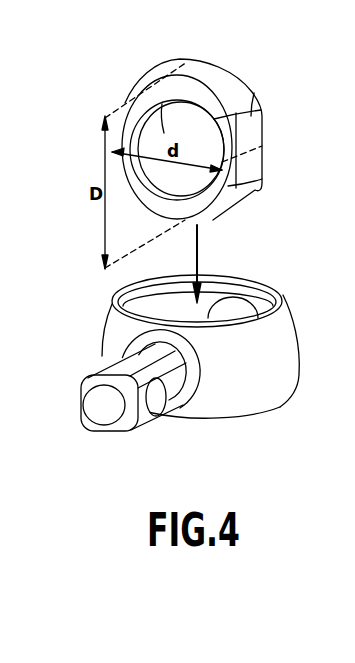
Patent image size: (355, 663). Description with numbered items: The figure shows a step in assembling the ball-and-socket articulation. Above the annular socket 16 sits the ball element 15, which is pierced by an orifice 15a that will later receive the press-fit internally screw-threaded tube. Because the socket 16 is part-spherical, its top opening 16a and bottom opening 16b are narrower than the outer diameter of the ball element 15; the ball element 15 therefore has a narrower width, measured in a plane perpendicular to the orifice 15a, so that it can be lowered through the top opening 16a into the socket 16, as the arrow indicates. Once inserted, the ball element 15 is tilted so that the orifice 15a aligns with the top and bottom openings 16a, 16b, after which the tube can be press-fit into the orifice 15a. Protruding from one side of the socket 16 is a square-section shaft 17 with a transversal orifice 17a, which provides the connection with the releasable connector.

The ball element 15 is at (234, 85).
The orifice 15a is at (197, 183).
The annular socket 16 is at (282, 348).
The top opening 16a is at (258, 292).
The bottom opening 16b is at (231, 420).
The square-section shaft 17 is at (88, 378).
The transversal orifice 17a is at (154, 404).